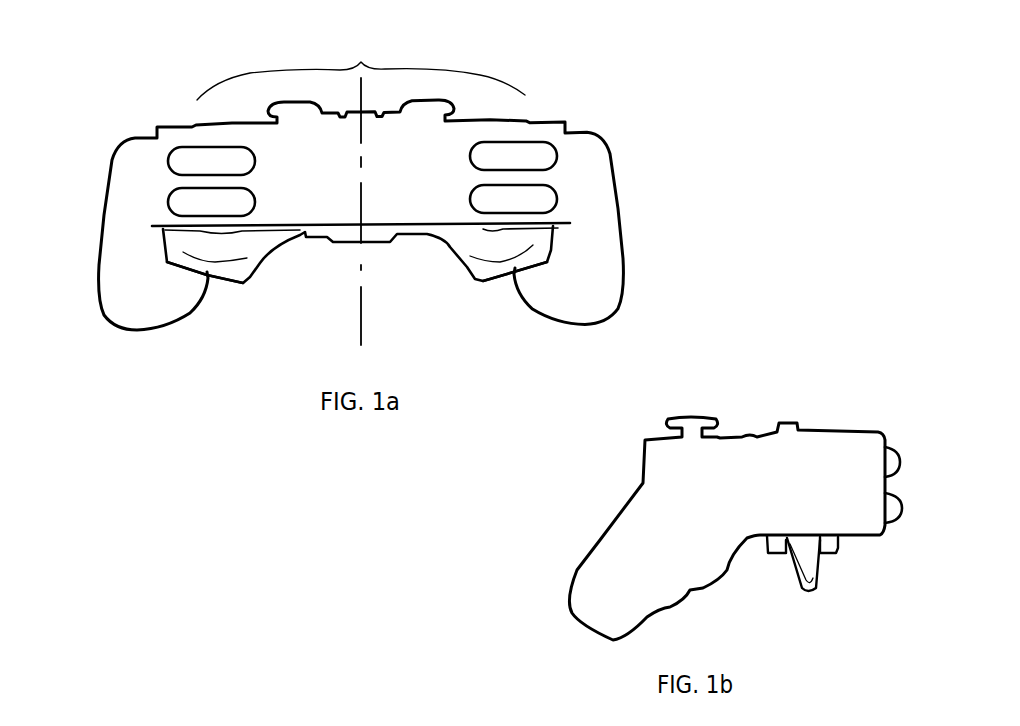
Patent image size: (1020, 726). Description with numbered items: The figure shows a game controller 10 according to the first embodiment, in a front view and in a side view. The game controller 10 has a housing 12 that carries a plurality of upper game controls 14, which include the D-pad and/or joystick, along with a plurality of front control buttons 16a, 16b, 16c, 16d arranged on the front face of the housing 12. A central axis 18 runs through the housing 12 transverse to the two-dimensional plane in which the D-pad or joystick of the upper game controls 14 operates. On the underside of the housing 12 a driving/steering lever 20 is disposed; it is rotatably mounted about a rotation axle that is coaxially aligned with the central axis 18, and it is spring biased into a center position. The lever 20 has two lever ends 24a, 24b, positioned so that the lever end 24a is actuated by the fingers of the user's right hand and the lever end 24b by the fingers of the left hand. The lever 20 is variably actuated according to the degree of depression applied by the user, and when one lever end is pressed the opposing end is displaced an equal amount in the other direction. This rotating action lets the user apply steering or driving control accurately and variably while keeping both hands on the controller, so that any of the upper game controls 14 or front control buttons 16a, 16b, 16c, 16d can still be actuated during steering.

In FIG. 1a, the game controller 10 is at (573, 95).
In FIG. 1a, the housing 12 is at (538, 131).
In FIG. 1b, the housing 12 is at (793, 453).
In FIG. 1a, the plurality of upper game controls 14 is at (361, 70).
In FIG. 1a, the front control button 16a is at (187, 162).
In FIG. 1a, the front control button 16b is at (180, 207).
In FIG. 1a, the front control button 16c is at (537, 157).
In FIG. 1a, the front control button 16d is at (537, 200).
In FIG. 1a, the central axis 18 is at (362, 295).
In FIG. 1a, the driving/steering lever 20 is at (307, 235).
In FIG. 1b, the driving/steering lever 20 is at (837, 547).
In FIG. 1a, the lever end 24a is at (233, 268).
In FIG. 1b, the lever end 24a is at (810, 577).
In FIG. 1a, the lever end 24b is at (487, 268).